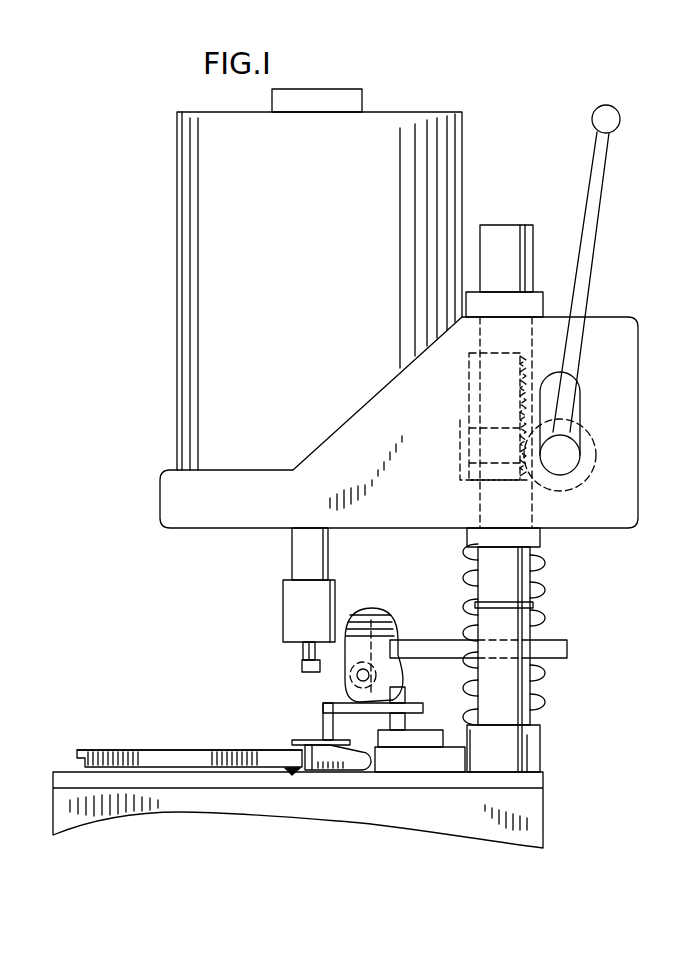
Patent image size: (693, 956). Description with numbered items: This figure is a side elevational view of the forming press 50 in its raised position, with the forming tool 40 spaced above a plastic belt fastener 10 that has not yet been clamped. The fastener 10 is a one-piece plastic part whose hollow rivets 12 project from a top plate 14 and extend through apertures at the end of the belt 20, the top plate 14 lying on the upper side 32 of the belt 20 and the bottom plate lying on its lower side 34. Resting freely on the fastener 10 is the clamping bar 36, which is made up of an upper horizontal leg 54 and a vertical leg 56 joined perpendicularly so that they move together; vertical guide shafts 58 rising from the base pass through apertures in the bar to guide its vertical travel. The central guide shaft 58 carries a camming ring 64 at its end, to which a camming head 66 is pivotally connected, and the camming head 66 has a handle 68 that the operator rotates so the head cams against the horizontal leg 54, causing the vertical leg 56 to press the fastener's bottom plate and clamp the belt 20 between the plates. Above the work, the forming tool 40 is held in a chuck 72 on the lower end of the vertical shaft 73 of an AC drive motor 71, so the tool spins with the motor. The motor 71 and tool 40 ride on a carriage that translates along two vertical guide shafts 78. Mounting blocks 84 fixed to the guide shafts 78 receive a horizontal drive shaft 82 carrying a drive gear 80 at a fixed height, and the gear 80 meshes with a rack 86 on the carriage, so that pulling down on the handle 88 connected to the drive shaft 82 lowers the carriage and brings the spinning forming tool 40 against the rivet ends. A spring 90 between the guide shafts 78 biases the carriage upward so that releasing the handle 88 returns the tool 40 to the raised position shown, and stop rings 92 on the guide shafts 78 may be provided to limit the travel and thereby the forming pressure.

The belt fastener 10 is at (282, 738).
The hollow rivets 12 is at (318, 772).
The top plate 14 is at (298, 773).
The belt 20 is at (165, 755).
The upper side of the belt 32 is at (142, 766).
The lower side of the belt 34 is at (100, 752).
The clamping bar 36 is at (323, 700).
The forming tool 40 is at (302, 650).
The forming press 50 is at (483, 190).
The horizontal leg 54 is at (420, 705).
The vertical leg 56 is at (325, 712).
The guide shafts 58 is at (420, 759).
The camming ring 64 is at (384, 616).
The camming head 66 is at (370, 618).
The handle 68 is at (569, 650).
The AC drive motor 71 is at (195, 282).
The chuck 72 is at (283, 597).
The shaft 73 is at (322, 557).
The guide shafts 78 is at (532, 650).
The drive gear 80 is at (618, 480).
The drive shaft 82 is at (575, 455).
The mounting blocks 84 is at (497, 470).
The rack 86 is at (476, 405).
The handle 88 is at (608, 186).
The spring 90 is at (530, 634).
The stop rings 92 is at (537, 612).